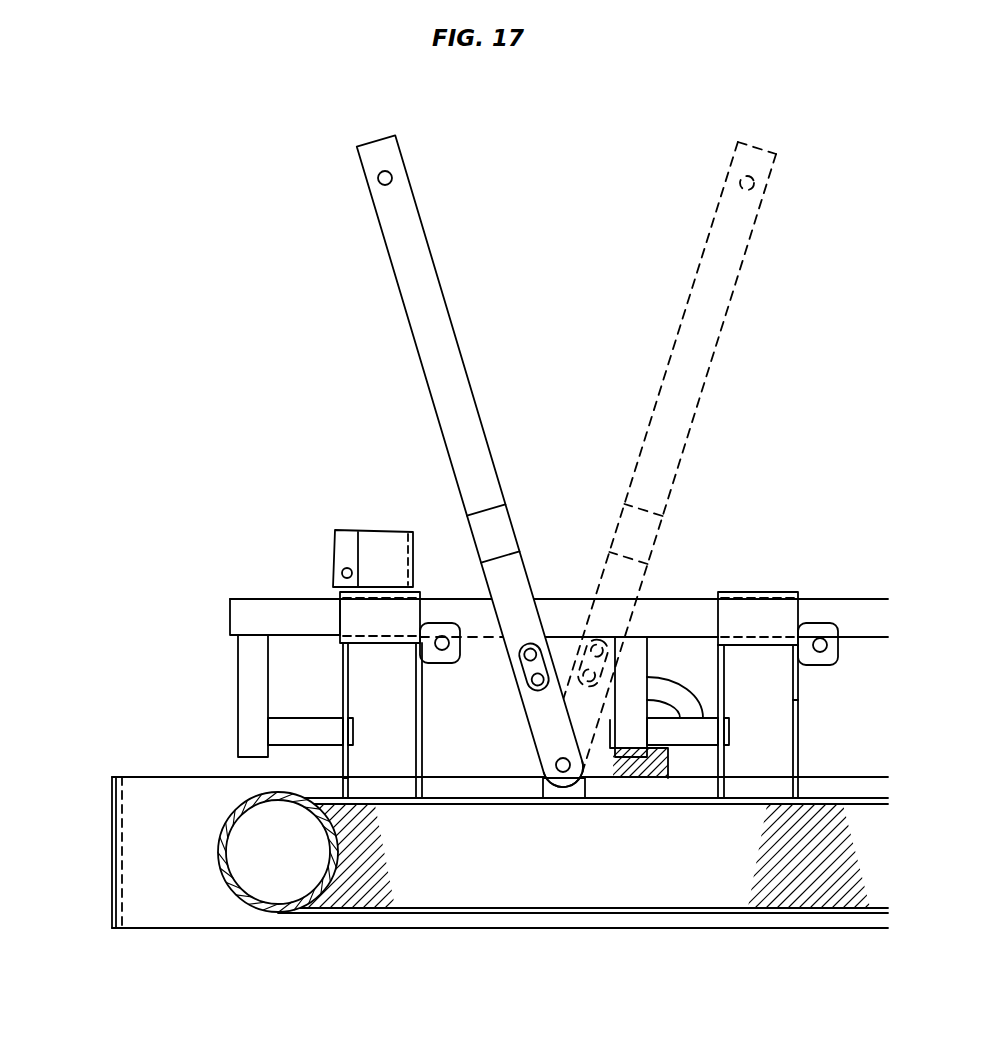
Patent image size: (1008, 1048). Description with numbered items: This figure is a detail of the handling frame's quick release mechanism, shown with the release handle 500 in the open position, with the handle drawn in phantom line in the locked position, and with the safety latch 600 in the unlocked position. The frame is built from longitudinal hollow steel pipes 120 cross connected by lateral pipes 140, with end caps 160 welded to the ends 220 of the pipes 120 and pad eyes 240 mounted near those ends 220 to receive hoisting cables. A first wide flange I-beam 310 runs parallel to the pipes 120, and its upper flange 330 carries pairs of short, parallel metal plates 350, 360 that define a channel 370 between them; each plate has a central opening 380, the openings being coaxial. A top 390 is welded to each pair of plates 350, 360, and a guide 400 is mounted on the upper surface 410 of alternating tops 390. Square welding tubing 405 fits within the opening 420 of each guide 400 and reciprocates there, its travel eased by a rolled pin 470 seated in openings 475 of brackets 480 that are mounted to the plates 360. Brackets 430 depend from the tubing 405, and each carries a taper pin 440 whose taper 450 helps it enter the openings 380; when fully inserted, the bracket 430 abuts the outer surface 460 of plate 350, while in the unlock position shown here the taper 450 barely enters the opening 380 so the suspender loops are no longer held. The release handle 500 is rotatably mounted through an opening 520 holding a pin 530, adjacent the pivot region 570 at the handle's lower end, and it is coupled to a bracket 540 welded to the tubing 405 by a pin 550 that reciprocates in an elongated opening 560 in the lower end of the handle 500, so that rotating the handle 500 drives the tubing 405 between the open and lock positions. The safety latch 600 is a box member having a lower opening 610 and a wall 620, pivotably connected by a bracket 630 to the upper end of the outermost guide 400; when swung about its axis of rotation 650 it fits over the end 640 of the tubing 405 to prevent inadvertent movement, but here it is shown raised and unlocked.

The longitudinal hollow steel pipes 120 is at (160, 942).
The lateral pipes 140 is at (240, 892).
The end caps 160 is at (112, 808).
The ends 220 is at (138, 776).
The pad eyes 240 is at (693, 708).
The first wide flange I-beam 310 is at (777, 914).
The upper flange 330 is at (638, 805).
The plate 350 is at (343, 690).
The plate 360 is at (800, 710).
The channel 370 is at (375, 764).
The opening 380 is at (347, 713).
The top 390 is at (770, 648).
The guide 400 is at (787, 622).
The tubing 405 is at (468, 693).
The upper surface 410 is at (735, 642).
The opening 420 is at (345, 608).
The bracket 430 is at (252, 682).
The taper pin 440 is at (288, 715).
The taper 450 is at (272, 662).
The outer surface 460 is at (342, 768).
The rolled pin 470 is at (817, 632).
The openings 475 is at (440, 627).
The brackets 480 is at (838, 652).
The release handle 500 is at (418, 220).
The opening 520 is at (560, 779).
The pin 530 is at (556, 752).
The bracket 540 is at (570, 640).
The pin 550 is at (530, 650).
The elongated opening 560 is at (527, 683).
The pivot boss 570 is at (540, 786).
The safety latch 600 is at (349, 512).
The lower opening 610 is at (377, 530).
The wall 620 is at (413, 548).
The bracket 630 is at (350, 560).
The end 640 is at (230, 617).
The axis of rotation 650 is at (342, 572).